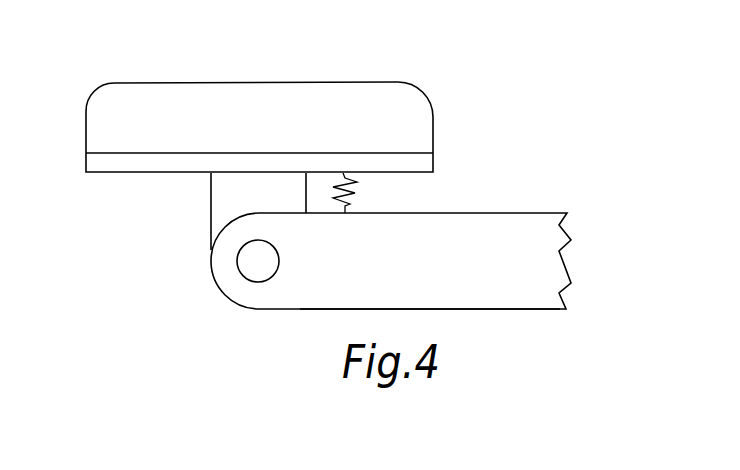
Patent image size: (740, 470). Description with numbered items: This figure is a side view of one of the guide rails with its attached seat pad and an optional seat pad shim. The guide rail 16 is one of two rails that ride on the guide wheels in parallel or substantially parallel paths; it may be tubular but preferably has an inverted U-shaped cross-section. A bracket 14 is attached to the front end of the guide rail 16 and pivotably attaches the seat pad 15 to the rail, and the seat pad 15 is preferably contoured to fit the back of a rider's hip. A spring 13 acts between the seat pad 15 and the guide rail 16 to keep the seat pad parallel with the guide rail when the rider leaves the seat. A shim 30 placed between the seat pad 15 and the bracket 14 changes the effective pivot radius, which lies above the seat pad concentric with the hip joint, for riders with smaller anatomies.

The spring 13 is at (354, 193).
The bracket 14 is at (220, 198).
The seat pad 15 is at (398, 82).
The guide rail 16 is at (540, 213).
The shim 30 is at (92, 162).